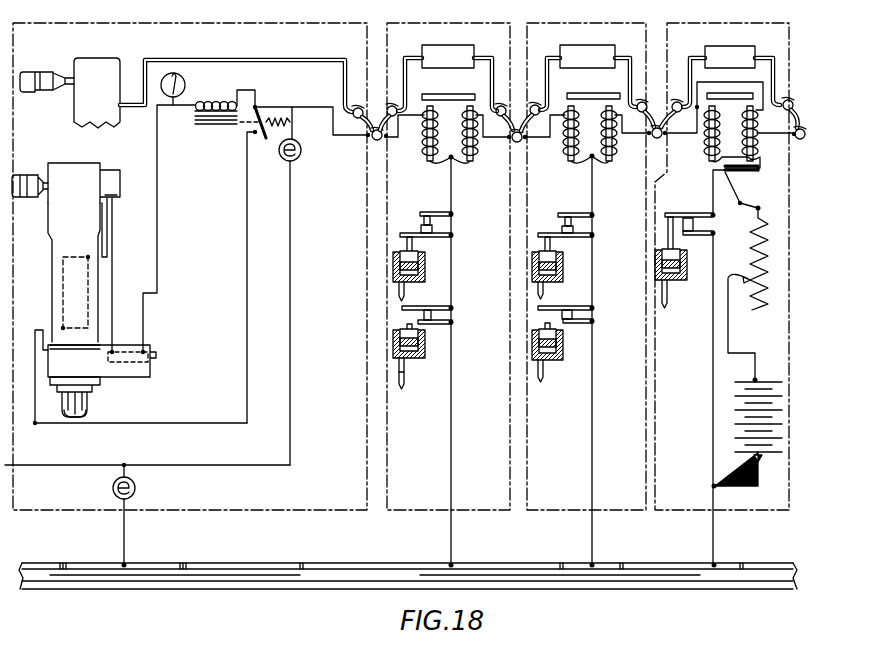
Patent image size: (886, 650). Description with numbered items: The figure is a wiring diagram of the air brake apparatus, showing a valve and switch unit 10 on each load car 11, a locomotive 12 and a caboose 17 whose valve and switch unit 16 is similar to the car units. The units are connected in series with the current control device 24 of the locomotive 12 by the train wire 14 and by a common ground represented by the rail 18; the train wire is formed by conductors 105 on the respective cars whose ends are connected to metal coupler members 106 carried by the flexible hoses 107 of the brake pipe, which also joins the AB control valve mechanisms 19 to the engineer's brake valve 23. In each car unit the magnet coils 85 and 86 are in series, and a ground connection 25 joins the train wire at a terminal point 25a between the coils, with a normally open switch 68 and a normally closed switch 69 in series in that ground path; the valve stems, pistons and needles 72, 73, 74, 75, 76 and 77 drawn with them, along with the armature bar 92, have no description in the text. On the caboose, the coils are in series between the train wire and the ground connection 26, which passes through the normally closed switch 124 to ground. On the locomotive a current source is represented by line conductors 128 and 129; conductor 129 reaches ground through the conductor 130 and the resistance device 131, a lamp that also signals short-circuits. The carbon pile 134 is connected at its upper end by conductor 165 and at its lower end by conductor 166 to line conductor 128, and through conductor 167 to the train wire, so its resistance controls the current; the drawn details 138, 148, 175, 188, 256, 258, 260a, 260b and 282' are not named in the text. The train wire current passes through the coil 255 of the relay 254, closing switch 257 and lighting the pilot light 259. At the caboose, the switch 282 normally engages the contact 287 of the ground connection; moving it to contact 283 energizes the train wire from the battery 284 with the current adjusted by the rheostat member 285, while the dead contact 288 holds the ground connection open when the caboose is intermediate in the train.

The valve and switch unit 10 is at (488, 215).
The load vehicle or car 11 is at (470, 505).
The control vehicle or locomotive 12 is at (212, 505).
The train wire 14 is at (170, 182).
The valve and switch unit 16 is at (698, 206).
The rear end control vehicle or caboose 17 is at (738, 505).
The rail 18 is at (354, 565).
The AB control valve mechanism 19 is at (445, 46).
The engineer's brake valve 23 is at (100, 58).
The current control device 24 is at (50, 238).
The ground connection 25 is at (452, 408).
The terminal point 25a is at (450, 162).
The ground connection 26 is at (714, 427).
The switch 68 is at (434, 228).
The switch 69 is at (434, 321).
The upper piston 72 is at (412, 266).
The lower valve needle 73 is at (406, 362).
The upper valve stem 74 is at (414, 256).
The lower piston 75 is at (412, 341).
The upper valve needle 76 is at (406, 290).
The lower needle tip 77 is at (406, 380).
The magnet coil 85 is at (428, 160).
The magnet coil 86 is at (474, 158).
The solenoid armature bar 92 is at (453, 94).
The conductor 105 is at (388, 140).
The metal coupler member 106 is at (378, 145).
The flexible hose 107 is at (395, 100).
The normally closed electric switch 124 is at (708, 236).
The line conductor 128 is at (24, 425).
The line conductor 129 is at (25, 467).
The conductor 130 is at (125, 531).
The resistance device 131 is at (136, 489).
The carbon pile 134 is at (75, 290).
The fuel inlet nozzle 138 is at (22, 176).
The pump head 148 is at (112, 170).
The conductor 165 is at (108, 226).
The conductor 166 is at (36, 332).
The conductor 167 is at (113, 268).
The outlet nozzle 175 is at (86, 410).
The switch housing 188 is at (152, 396).
The relay 254 is at (224, 86).
The coil 255 is at (235, 101).
The relay core 256 is at (222, 126).
The switch 257 is at (268, 110).
The resistor 258 is at (290, 124).
The pilot light 259 is at (312, 142).
The conductor 260a is at (247, 330).
The conductor 260b is at (291, 331).
The switch 282 is at (754, 185).
The armature bar end 282' is at (757, 175).
The contact 283 is at (760, 210).
The battery 284 is at (740, 396).
The rheostat member 285 is at (728, 280).
The contact 287 is at (725, 172).
The dead contact 288 is at (740, 205).